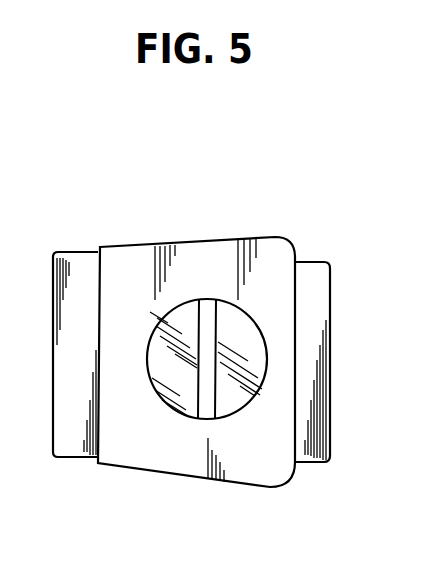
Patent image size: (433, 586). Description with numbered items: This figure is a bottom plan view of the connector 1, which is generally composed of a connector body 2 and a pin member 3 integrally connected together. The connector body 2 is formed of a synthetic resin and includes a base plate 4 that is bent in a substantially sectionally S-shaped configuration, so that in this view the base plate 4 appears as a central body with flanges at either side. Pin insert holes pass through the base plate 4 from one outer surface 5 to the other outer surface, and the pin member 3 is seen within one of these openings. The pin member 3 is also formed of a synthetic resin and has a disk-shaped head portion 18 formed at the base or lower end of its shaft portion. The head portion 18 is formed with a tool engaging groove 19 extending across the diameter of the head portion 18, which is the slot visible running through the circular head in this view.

The connector 1 is at (296, 218).
The connector body 2 is at (223, 242).
The pin member 3 is at (190, 416).
The base plate 4 is at (142, 246).
The outer surface 5 is at (280, 265).
The head portion 18 is at (247, 355).
The tool engaging groove 19 is at (210, 391).